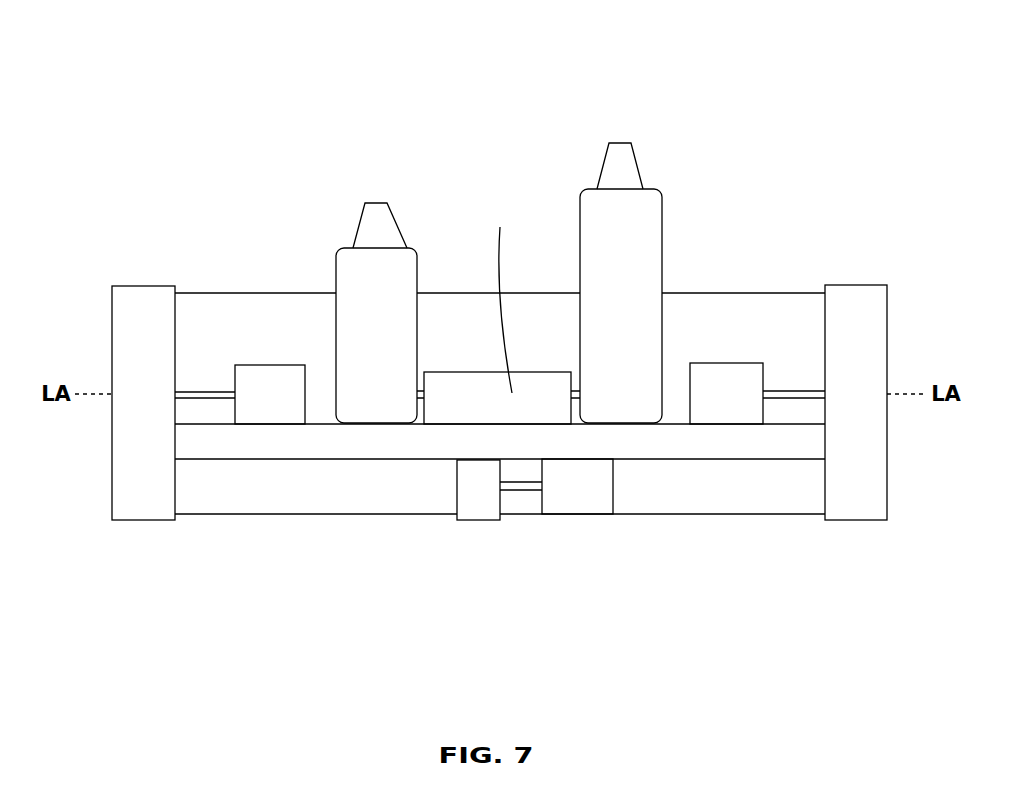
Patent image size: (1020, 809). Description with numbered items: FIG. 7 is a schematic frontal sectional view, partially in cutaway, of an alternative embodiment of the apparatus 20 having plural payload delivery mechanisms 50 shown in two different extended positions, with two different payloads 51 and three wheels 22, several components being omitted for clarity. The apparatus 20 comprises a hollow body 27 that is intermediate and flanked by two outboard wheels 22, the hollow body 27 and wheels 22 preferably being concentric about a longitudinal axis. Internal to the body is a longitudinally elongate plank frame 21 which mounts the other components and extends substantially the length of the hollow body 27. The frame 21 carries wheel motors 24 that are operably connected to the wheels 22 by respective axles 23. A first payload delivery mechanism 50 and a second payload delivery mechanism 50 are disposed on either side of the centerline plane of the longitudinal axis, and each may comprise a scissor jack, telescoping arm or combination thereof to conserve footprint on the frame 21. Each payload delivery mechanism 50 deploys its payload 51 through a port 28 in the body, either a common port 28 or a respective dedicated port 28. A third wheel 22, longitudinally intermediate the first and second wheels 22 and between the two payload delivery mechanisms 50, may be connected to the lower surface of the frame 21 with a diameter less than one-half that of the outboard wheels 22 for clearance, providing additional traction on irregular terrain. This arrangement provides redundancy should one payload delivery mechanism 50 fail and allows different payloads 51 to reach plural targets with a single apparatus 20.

The apparatus 20 is at (300, 63).
The plank frame 21 is at (498, 453).
The wheel 22 is at (141, 298).
The axle 23 is at (209, 393).
The wheel motor 24 is at (274, 373).
The hollow body 27 is at (292, 542).
The port 28 is at (417, 293).
The payload delivery mechanism 50 is at (407, 258).
The payload 51 is at (372, 210).